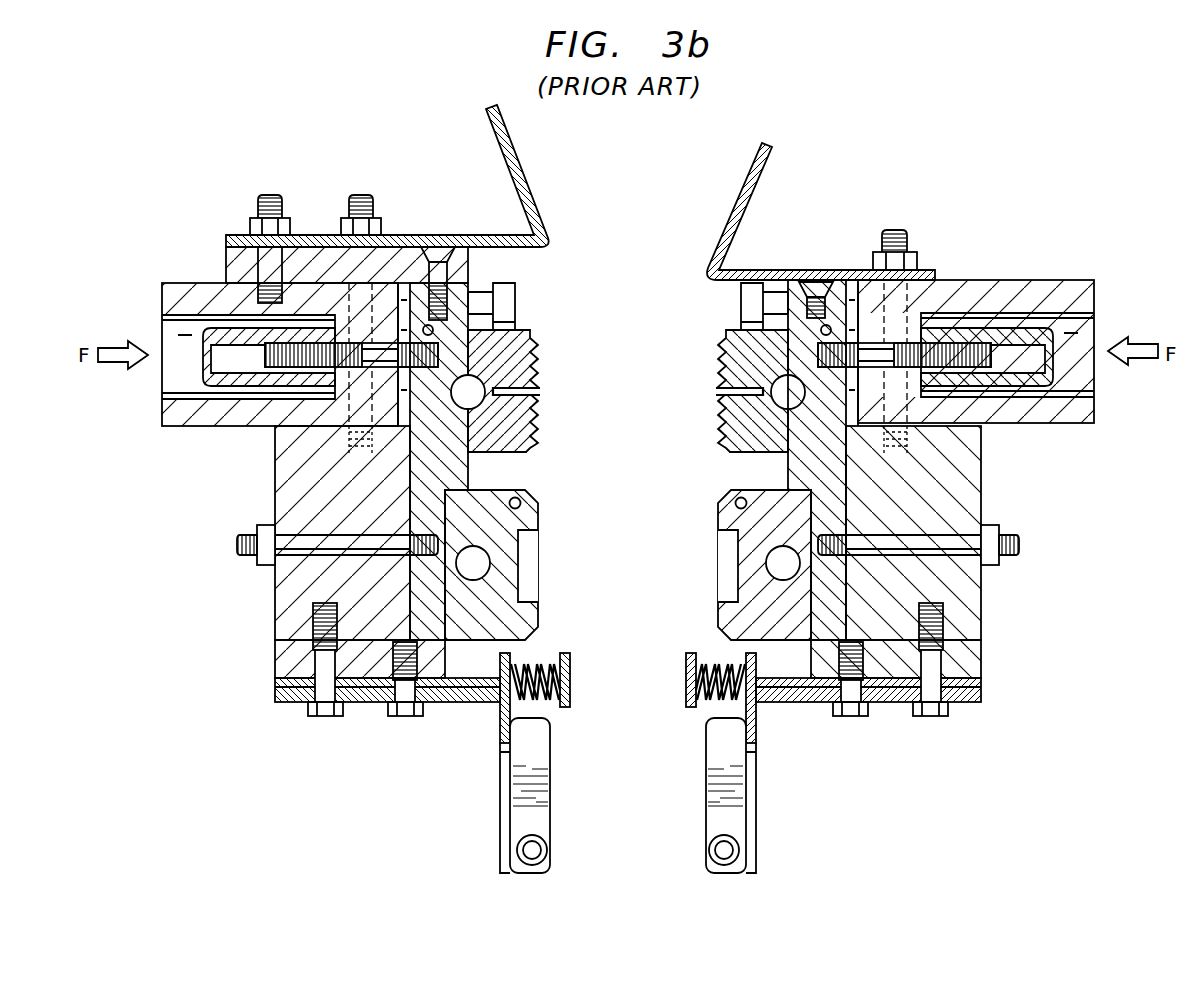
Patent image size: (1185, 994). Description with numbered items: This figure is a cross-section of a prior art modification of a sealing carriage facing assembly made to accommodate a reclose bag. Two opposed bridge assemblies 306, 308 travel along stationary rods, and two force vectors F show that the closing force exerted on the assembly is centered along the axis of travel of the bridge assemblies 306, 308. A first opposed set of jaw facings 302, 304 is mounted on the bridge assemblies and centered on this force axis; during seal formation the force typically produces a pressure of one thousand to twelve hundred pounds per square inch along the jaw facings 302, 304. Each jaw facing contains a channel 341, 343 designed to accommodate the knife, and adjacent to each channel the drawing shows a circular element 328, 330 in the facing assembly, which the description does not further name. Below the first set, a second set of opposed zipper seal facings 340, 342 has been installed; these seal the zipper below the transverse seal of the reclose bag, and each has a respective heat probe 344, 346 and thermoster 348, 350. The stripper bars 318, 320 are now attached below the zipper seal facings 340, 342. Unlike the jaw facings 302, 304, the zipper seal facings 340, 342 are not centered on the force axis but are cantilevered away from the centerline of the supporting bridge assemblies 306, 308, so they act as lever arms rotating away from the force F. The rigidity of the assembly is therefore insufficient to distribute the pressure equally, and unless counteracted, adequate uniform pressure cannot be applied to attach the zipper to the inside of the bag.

The jaw facing 302 is at (531, 330).
The jaw facing 304 is at (718, 356).
The bridge assembly 306 is at (193, 283).
The bridge assembly 308 is at (1010, 280).
The stripper bar 318 is at (572, 700).
The stripper bar 320 is at (684, 670).
The detent ball (left) 328 is at (472, 400).
The detent ball (right) 330 is at (784, 398).
The zipper seal facing 340 is at (541, 553).
The zipper seal facing 342 is at (715, 553).
The channel 341 is at (539, 390).
The channel 343 is at (716, 392).
The heat probe 344 is at (475, 572).
The heat probe 346 is at (780, 572).
The thermoster 348 is at (520, 498).
The thermoster 350 is at (738, 500).